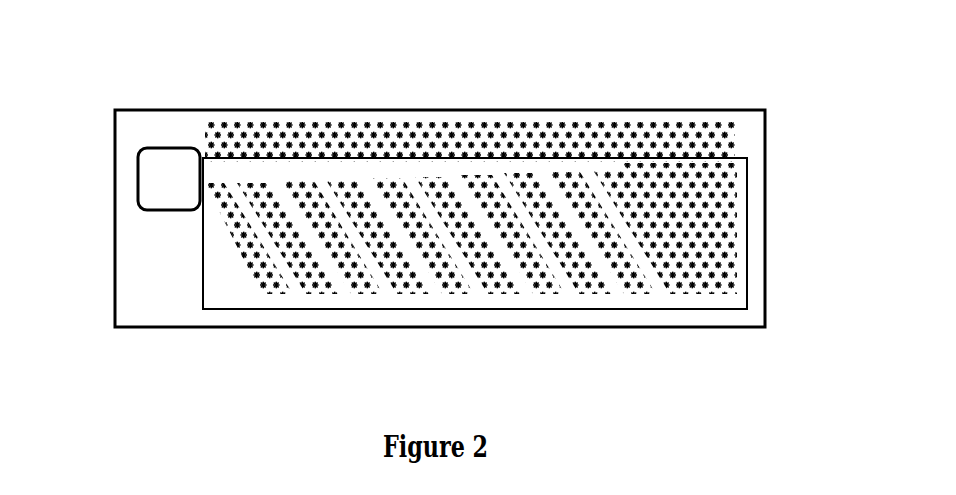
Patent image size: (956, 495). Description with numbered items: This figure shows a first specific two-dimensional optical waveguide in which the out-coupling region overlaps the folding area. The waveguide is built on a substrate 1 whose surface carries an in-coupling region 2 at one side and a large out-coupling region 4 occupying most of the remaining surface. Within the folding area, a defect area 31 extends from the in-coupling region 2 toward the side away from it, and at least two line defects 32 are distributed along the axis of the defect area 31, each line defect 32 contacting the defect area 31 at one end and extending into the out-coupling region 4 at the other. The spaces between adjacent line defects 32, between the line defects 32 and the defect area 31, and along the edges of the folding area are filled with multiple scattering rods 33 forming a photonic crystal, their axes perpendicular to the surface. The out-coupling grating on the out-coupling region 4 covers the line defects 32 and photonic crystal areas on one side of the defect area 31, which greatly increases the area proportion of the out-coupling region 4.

The substrate 1 is at (145, 130).
The in-coupling region 2 is at (137, 169).
The out-coupling region 4 is at (747, 200).
The defect area 31 is at (227, 178).
The line defect 32 is at (237, 218).
The scattering rod 33 is at (340, 140).